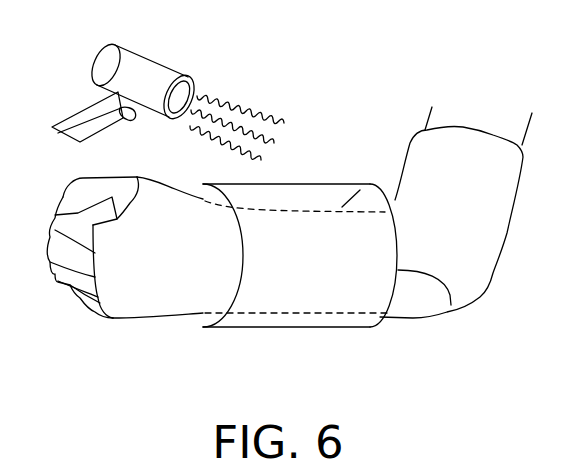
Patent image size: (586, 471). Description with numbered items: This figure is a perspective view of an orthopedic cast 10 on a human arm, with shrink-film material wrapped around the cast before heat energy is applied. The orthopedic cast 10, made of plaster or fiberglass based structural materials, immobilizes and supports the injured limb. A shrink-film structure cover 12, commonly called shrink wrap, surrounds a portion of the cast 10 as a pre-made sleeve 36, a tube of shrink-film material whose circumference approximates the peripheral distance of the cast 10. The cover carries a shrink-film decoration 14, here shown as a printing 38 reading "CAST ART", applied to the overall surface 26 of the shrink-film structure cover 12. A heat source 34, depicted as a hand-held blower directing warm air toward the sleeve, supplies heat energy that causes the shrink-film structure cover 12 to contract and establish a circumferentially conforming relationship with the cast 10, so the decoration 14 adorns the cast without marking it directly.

The orthopedic cast 10 is at (147, 257).
The shrink-film structure cover 12 is at (347, 295).
The shrink-film decoration 14 is at (317, 278).
The overall surface 26 is at (270, 275).
The heat source 34 is at (143, 80).
The pre-made sleeve 36 is at (451, 305).
The printing 38 is at (313, 232).